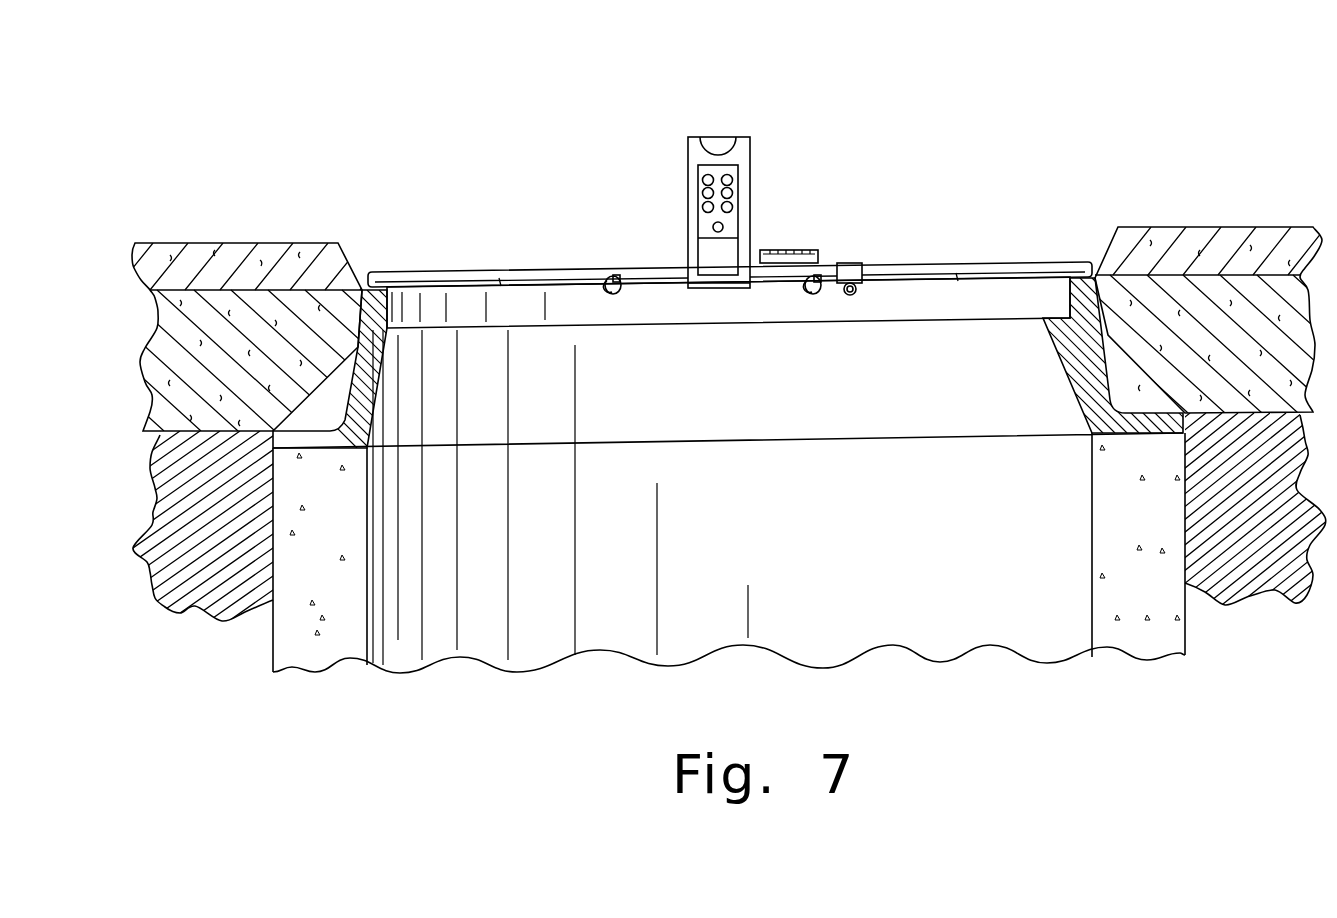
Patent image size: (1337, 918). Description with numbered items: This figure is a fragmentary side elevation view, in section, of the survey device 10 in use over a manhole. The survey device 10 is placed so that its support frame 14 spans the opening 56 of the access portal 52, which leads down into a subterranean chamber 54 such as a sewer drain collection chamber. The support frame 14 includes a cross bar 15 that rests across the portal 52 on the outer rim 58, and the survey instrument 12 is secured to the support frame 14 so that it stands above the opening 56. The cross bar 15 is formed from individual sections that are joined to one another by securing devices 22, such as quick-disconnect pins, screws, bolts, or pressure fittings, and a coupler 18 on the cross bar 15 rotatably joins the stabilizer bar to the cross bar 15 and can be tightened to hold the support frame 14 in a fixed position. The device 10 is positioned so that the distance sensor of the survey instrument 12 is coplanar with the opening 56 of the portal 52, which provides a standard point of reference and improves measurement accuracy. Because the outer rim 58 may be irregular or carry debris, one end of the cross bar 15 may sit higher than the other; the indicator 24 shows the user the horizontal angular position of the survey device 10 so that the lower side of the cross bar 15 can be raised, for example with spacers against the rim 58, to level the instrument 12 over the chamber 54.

The survey device 10 is at (638, 142).
The survey instrument 12 is at (762, 137).
The support frame 14 is at (455, 238).
The cross bar 15 is at (500, 280).
The coupler 18 is at (858, 264).
The securing devices 22 is at (616, 274).
The indicator 24 is at (810, 250).
The access portal 52 is at (983, 245).
The subterranean chamber 54 is at (540, 638).
The opening 56 is at (535, 258).
The outer rim 58 is at (387, 262).